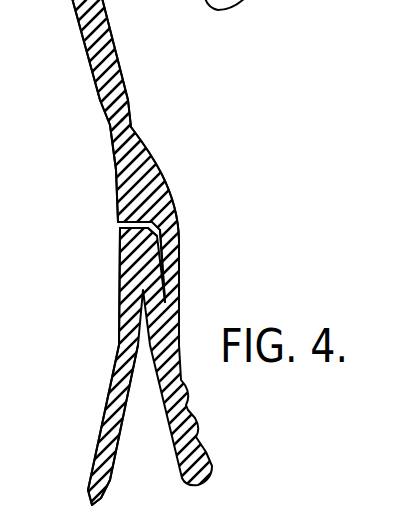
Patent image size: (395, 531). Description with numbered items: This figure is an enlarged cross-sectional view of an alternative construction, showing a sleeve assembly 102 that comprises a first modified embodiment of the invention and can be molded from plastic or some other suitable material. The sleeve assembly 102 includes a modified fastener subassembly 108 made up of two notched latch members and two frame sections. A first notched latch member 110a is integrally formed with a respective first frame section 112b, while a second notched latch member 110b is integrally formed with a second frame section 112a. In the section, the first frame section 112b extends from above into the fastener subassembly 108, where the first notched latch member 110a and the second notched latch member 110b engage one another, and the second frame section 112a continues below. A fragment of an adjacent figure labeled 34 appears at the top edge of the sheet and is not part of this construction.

The sleeve assembly 102 is at (160, 134).
The fastener subassembly 108 is at (168, 178).
The first notched latch member 110a is at (178, 218).
The second notched latch member 110b is at (120, 256).
The second frame section 112a is at (117, 368).
The first frame section 112b is at (100, 97).
The element of adjacent figure 34 is at (275, 6).